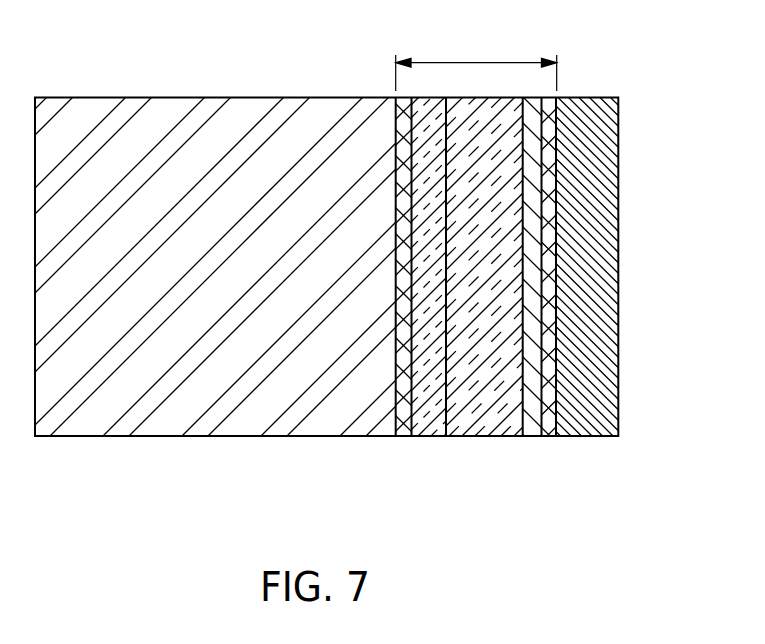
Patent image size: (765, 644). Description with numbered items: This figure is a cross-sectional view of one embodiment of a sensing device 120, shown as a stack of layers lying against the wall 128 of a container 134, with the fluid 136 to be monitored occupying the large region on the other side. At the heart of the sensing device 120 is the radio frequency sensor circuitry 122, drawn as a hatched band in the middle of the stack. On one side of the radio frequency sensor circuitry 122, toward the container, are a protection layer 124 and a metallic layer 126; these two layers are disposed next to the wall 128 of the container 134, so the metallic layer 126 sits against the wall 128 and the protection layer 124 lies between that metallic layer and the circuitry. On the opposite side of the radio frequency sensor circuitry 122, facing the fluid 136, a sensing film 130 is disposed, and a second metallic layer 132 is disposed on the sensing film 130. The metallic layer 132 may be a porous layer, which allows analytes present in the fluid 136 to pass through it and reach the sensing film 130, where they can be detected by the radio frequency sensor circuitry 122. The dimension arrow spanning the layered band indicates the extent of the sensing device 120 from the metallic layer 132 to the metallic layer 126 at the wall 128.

The sensing device 120 is at (479, 62).
The radio frequency sensor circuitry 122 is at (473, 437).
The protection layer 124 is at (532, 437).
The metallic layer 126 is at (550, 437).
The wall 128 is at (587, 97).
The sensing film 130 is at (423, 437).
The metallic layer 132 is at (402, 437).
The container 134 is at (229, 437).
The fluid 136 is at (190, 108).